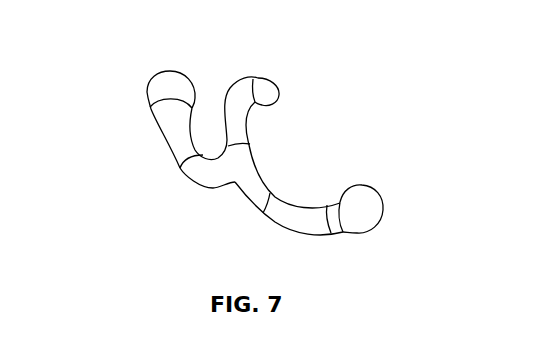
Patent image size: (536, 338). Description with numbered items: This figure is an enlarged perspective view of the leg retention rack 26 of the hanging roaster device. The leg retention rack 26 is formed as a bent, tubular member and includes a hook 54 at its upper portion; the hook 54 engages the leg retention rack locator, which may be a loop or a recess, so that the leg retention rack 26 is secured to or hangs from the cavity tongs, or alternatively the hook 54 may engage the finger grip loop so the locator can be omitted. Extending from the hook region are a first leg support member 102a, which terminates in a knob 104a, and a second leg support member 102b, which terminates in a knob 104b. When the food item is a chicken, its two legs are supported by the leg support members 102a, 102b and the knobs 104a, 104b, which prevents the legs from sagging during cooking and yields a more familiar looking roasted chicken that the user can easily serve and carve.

The leg retention rack 26 is at (118, 40).
The hook 54 is at (269, 80).
The first leg support member 102a is at (180, 168).
The second leg support member 102b is at (297, 236).
The knob 104a is at (147, 93).
The knob 104b is at (382, 200).